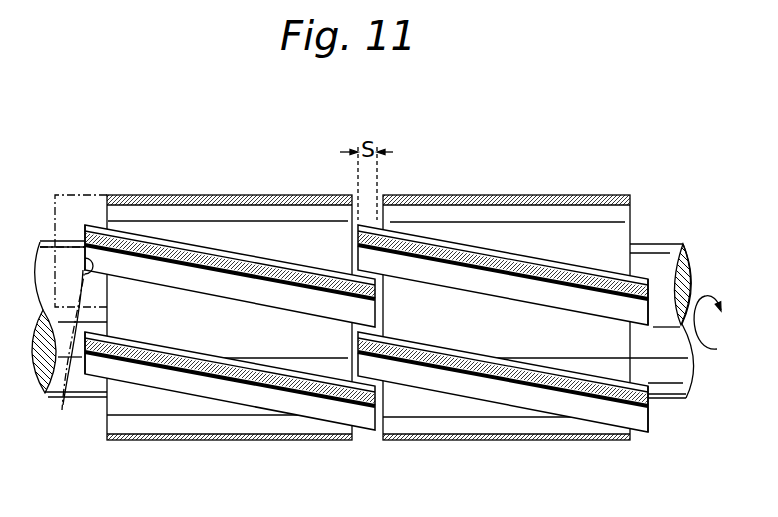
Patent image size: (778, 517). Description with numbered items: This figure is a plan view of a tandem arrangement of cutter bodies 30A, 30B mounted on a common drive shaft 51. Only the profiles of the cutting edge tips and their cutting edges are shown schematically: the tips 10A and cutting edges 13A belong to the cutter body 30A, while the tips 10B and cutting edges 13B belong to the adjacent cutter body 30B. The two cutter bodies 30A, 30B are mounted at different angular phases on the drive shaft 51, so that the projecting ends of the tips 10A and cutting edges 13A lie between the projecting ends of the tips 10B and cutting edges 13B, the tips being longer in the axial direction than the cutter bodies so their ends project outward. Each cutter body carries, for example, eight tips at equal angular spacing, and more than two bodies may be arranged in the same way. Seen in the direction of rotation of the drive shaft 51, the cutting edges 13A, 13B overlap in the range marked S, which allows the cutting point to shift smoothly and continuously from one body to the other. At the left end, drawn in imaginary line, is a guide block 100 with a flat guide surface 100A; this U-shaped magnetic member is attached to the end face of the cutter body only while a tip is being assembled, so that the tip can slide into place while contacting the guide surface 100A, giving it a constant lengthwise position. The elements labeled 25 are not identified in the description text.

The guide block 100 is at (93, 194).
The flat guide surface 100A is at (63, 337).
The cutting edge tips of cutter body 30A 10A is at (229, 319).
The cutting edge tips of cutter body 30B 10B is at (506, 318).
The first cutter body 30A is at (222, 177).
The second cutter body 30B is at (441, 222).
The cutting edges of cutter body 30A 13A is at (232, 275).
The cutting edges of cutter body 30B 13B is at (510, 270).
The blade mounting ends 25 is at (88, 227).
The drive shaft 51 is at (660, 252).